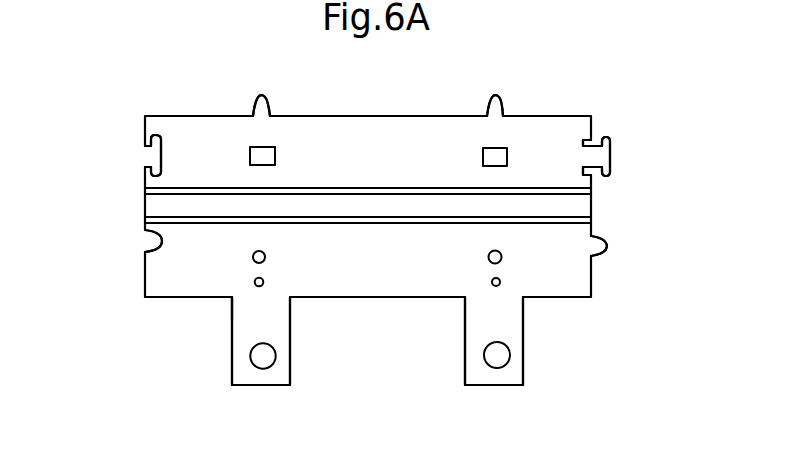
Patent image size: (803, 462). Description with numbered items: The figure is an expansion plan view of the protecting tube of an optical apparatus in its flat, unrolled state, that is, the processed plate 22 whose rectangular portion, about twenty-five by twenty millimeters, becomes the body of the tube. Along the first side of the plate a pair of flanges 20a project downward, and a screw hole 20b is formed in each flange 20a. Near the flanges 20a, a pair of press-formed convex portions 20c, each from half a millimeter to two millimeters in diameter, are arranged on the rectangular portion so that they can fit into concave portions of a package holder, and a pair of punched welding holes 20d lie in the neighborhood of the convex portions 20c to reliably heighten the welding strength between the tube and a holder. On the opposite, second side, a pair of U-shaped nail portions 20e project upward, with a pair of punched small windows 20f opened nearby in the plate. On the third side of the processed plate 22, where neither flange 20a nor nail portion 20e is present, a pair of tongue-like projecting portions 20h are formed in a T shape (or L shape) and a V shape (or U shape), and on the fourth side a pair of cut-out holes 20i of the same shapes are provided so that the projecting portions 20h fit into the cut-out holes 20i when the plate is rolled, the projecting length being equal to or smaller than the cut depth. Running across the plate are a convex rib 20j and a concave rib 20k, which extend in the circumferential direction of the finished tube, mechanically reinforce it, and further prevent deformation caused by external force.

The processed plate 22 is at (400, 116).
The flange 20a is at (242, 377).
The screw hole 20b is at (265, 356).
The convex portion 20c is at (240, 305).
The welding hole 20d is at (270, 257).
The nail portion 20e is at (264, 106).
The small window 20f is at (275, 155).
The tongue-like projecting portion 20h is at (607, 155).
The cut-out hole 20i is at (157, 153).
The convex rib 20j is at (147, 200).
The concave rib 20k is at (565, 217).